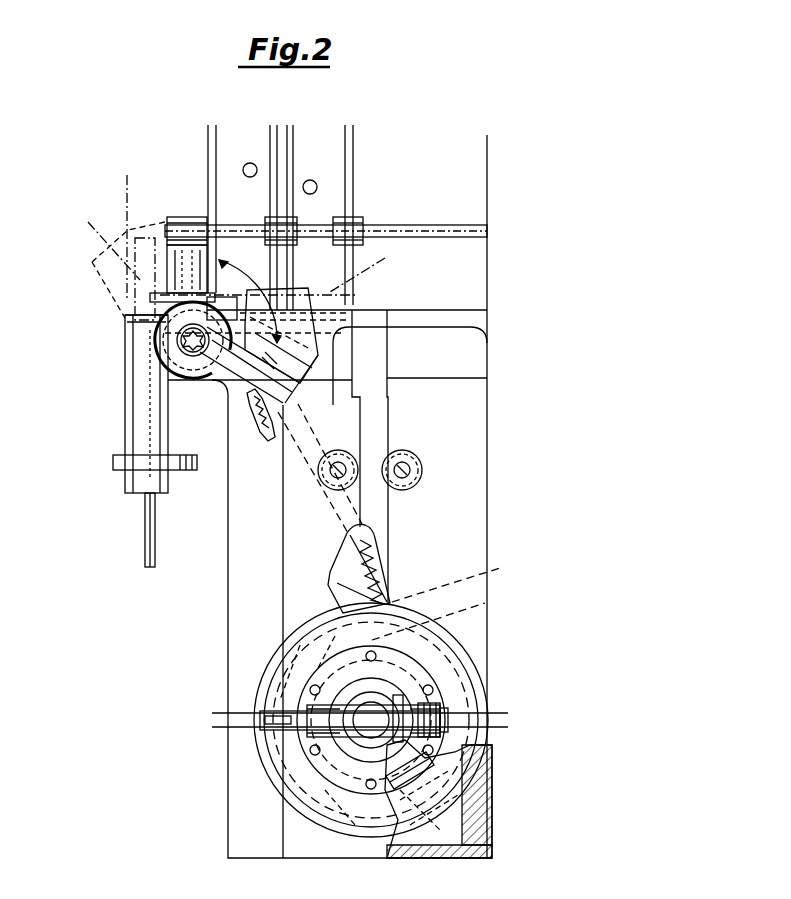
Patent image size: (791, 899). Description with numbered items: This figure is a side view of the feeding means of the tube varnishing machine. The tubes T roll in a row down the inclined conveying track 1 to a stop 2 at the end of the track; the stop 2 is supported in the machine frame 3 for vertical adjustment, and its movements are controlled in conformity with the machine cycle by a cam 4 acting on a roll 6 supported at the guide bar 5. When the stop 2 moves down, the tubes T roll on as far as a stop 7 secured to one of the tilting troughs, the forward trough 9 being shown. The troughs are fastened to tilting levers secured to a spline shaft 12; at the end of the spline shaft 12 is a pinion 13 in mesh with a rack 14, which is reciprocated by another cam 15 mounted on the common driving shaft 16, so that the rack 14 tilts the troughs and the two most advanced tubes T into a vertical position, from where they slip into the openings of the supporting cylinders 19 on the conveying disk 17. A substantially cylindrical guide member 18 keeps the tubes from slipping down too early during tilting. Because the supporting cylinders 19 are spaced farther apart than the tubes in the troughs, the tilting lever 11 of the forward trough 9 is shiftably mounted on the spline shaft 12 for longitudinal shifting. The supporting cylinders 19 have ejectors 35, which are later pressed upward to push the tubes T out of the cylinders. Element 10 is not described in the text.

The conveying track 1 is at (352, 192).
The stop 2 is at (378, 372).
The machine frame 3 is at (486, 418).
The cam 4 is at (437, 643).
The guide bar 5 is at (380, 526).
The roll 6 is at (451, 592).
The stop 7 is at (384, 300).
The tilting trough 9 is at (330, 346).
The block 10 is at (305, 366).
The tilting lever 11 is at (289, 395).
The spline shaft 12 is at (176, 342).
The pinion 13 is at (162, 370).
The rack 14 is at (244, 412).
The cam 15 is at (446, 674).
The common driving shaft 16 is at (350, 731).
The conveying disk 17 is at (123, 466).
The guide member 18 is at (136, 314).
The supporting cylinders 19 is at (130, 405).
The ejectors 35 is at (146, 515).
The tubes T is at (235, 249).